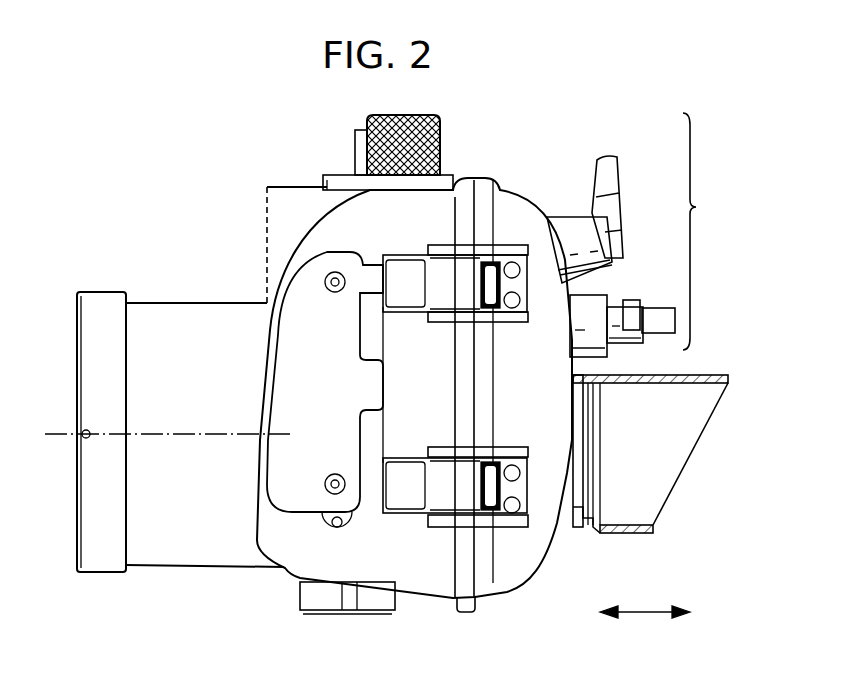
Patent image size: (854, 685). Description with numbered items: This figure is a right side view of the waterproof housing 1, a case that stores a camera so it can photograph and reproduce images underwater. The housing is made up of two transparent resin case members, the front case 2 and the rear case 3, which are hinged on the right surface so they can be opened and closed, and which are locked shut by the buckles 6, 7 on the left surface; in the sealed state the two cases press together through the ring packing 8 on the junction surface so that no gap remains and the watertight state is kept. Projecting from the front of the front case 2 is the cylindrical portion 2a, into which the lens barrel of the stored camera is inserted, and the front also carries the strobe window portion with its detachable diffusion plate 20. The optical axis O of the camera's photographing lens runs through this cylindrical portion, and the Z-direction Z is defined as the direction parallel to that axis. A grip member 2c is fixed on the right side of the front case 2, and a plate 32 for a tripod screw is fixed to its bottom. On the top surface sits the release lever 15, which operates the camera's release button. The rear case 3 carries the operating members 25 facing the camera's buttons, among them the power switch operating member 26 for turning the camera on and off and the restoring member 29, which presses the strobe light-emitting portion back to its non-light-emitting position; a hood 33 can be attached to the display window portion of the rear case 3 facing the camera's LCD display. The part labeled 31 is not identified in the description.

The waterproof housing 1 is at (132, 178).
The front case 2 is at (305, 226).
The cylindrical portion 2a is at (150, 301).
The grip member 2c is at (300, 360).
The rear case 3 is at (543, 207).
The buckle 6 is at (435, 277).
The buckle 7 is at (417, 495).
The ring packing 8 is at (95, 292).
The release lever 15 is at (355, 140).
The diffusion plate 20 is at (258, 238).
The operating members 25 is at (640, 231).
The power switch operating member 26 is at (640, 320).
The restoring member 29 is at (618, 181).
The knob 31 is at (402, 116).
The plate for tripod screw 32 is at (322, 618).
The hood 33 is at (690, 375).
The optical axis O is at (60, 430).
The Z-direction Z is at (645, 602).